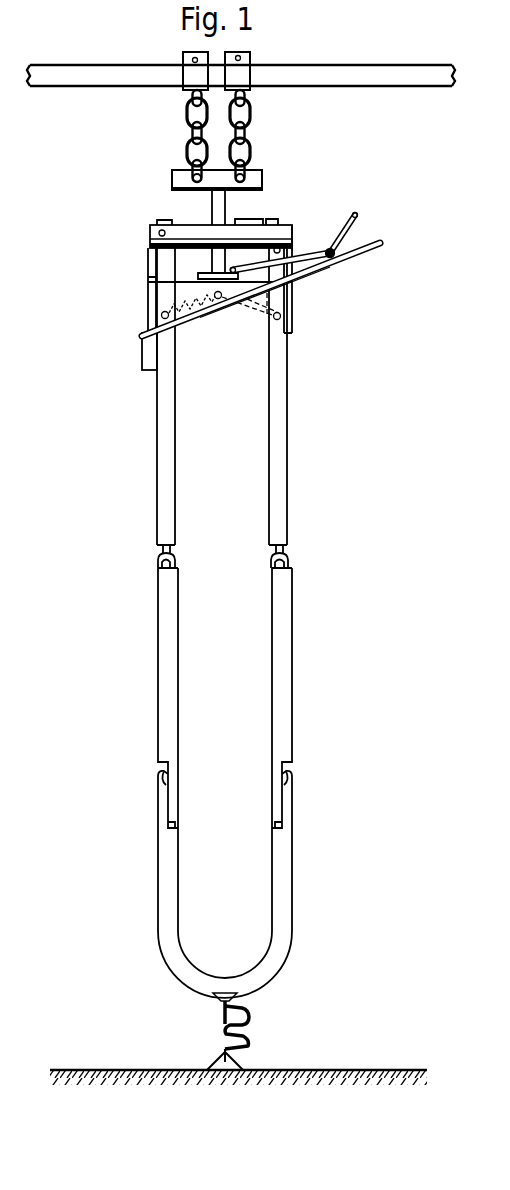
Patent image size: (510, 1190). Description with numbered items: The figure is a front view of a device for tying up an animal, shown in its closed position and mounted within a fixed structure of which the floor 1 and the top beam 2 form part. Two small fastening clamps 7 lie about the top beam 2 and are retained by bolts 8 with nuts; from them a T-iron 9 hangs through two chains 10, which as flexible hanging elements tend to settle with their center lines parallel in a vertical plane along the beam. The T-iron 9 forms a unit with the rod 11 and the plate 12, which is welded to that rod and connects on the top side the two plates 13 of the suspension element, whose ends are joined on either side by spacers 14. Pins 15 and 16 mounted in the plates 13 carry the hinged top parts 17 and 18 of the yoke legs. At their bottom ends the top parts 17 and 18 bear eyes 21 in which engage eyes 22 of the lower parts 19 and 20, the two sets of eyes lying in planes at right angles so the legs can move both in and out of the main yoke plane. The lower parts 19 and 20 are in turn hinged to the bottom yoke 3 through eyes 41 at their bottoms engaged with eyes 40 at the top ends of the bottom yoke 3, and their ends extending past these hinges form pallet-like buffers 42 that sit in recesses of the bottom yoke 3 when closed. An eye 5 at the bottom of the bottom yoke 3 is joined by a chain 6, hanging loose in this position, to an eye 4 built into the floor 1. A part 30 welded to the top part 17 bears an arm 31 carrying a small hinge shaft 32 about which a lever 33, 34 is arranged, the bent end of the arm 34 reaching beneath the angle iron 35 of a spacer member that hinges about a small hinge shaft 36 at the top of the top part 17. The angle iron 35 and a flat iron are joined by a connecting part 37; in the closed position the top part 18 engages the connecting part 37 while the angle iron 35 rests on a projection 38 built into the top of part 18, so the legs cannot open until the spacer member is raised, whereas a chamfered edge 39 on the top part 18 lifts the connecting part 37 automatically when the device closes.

The floor 1 is at (137, 1070).
The top beam 2 is at (337, 76).
The bottom yoke 3 is at (165, 885).
The eye 4 is at (238, 1062).
The eye 5 is at (219, 996).
The chain 6 is at (222, 1020).
The fastening clamps 7 is at (242, 60).
The bolts 8 is at (192, 60).
The T-iron 9 is at (260, 180).
The chains 10 is at (250, 110).
The rod 11 is at (217, 204).
The plate 12 is at (210, 274).
The plates 13 is at (182, 293).
The spacers 14 is at (152, 272).
The pin 15 is at (161, 316).
The pin 16 is at (283, 320).
The top part 17 is at (164, 438).
The top part 18 is at (280, 440).
The lower part 19 is at (160, 695).
The lower part 20 is at (287, 695).
The eyes 21 is at (288, 550).
The eyes 22 is at (158, 563).
The part 30 is at (146, 358).
The arm 31 is at (382, 242).
The small hinge shaft 32 is at (332, 257).
The lever 33 is at (359, 217).
The arm of lever 34 is at (307, 262).
The angle iron 35 is at (182, 240).
The small hinge shaft 36 is at (159, 233).
The connecting part 37 is at (257, 223).
The projection 38 is at (300, 249).
The chamfered edge 39 is at (290, 243).
The eyes 40 is at (162, 782).
The eyes 41 is at (284, 765).
The pallet-like buffers 42 is at (172, 812).